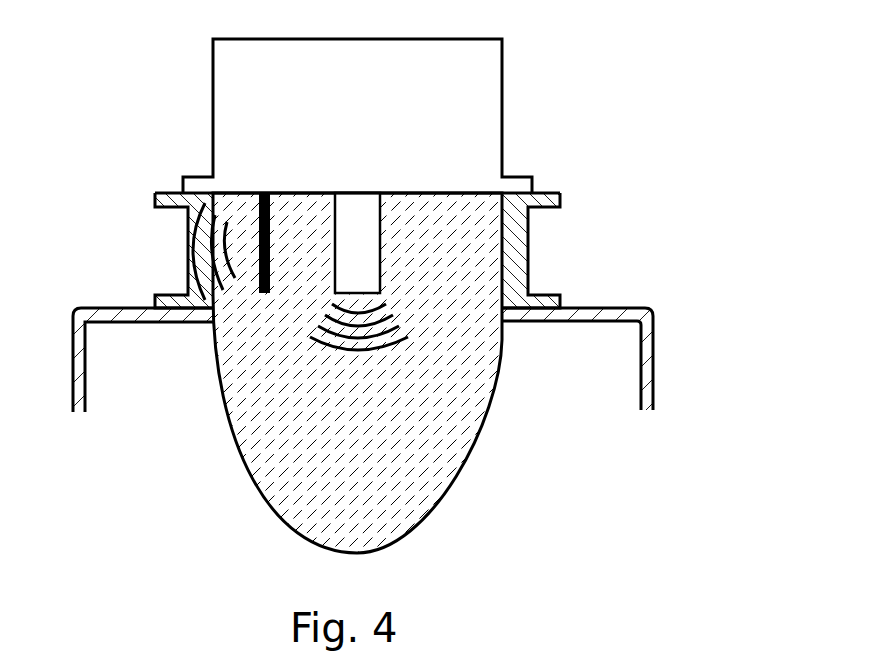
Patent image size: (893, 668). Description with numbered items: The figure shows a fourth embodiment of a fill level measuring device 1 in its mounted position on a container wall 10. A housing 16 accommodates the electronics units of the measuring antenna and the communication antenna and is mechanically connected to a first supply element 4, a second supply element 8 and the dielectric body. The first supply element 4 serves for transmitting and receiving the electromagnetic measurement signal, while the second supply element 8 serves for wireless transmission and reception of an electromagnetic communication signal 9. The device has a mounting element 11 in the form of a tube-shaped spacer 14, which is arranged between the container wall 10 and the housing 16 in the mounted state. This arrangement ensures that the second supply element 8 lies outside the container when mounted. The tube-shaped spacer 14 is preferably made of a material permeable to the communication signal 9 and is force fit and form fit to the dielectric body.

The fill level measuring device 1 is at (412, 279).
The first supply element 4 is at (380, 255).
The second supply element 8 is at (264, 294).
The electromagnetic communication signal 9 is at (172, 219).
The container wall 10 is at (648, 377).
The mounting element 11 is at (562, 192).
The tube-shaped spacer 14 is at (530, 273).
The housing 16 is at (490, 88).